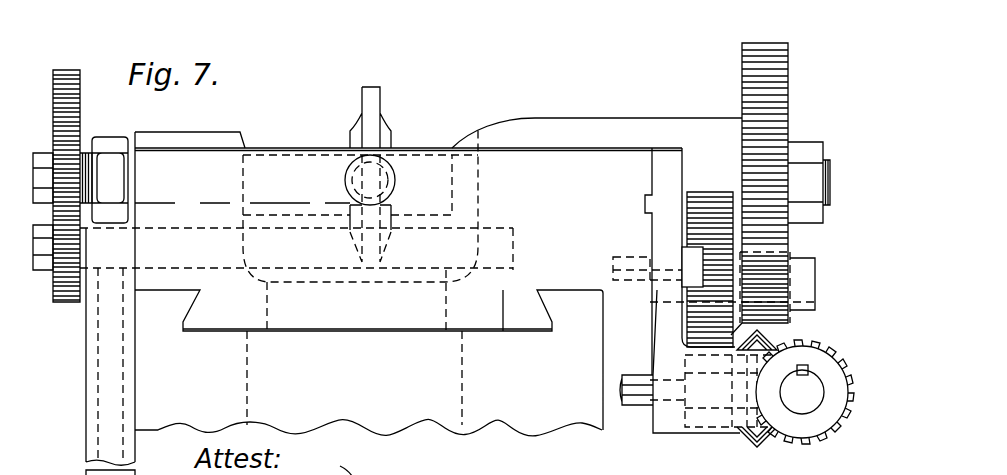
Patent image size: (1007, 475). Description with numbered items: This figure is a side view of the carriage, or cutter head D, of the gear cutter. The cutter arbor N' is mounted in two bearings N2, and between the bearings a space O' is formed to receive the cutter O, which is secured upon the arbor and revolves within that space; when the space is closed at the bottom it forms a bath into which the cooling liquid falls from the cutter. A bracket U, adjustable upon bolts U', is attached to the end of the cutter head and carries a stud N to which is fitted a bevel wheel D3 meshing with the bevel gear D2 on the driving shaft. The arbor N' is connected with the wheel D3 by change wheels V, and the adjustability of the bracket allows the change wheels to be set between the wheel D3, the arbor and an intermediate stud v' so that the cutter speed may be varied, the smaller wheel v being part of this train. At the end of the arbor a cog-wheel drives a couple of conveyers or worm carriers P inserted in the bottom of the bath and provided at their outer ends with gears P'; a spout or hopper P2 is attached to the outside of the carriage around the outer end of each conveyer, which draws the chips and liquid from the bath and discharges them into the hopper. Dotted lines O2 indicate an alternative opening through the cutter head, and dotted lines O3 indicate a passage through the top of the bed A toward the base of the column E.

The cutter head D is at (571, 152).
The bearings N2 is at (187, 135).
The cutter arbor N' is at (569, 169).
The gears P' is at (62, 202).
The dotted lines indicating an opening O2 is at (80, 100).
The dotted lines indicating a passage O3 is at (248, 386).
The spout or hopper P2 is at (86, 398).
The conveyers or worm carriers P is at (296, 272).
The cutter O is at (370, 159).
The space or aperture O' is at (360, 223).
The base / bed A is at (463, 378).
The bracket U is at (693, 249).
The bolts U' is at (650, 255).
The pinion gears v is at (750, 253).
The change wheels V is at (790, 108).
The pinion shaft v' is at (749, 284).
The stud N is at (671, 380).
The bevel wheel D3 is at (757, 442).
The bevel gear D2 is at (822, 439).
The column E is at (802, 389).